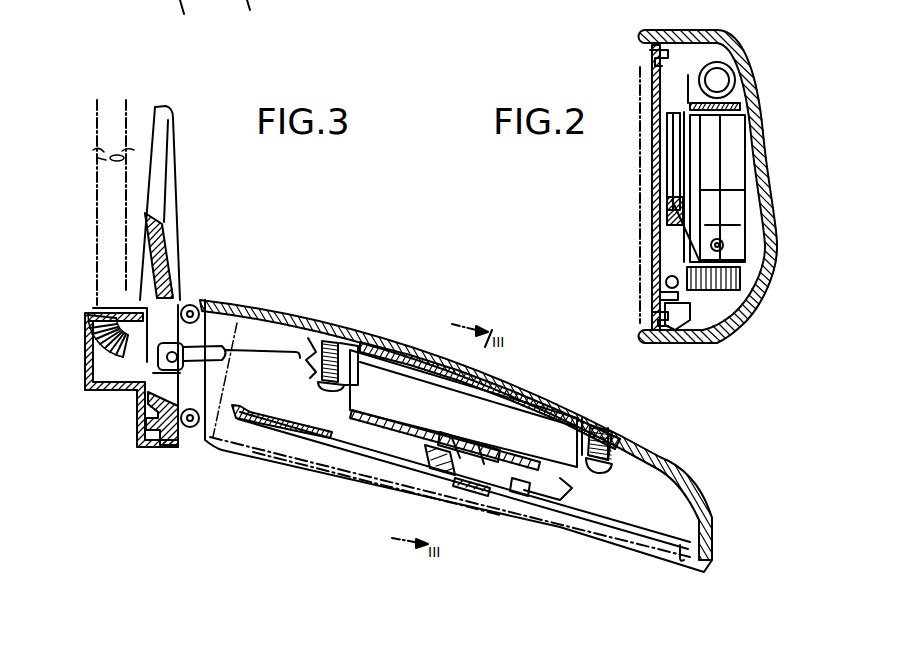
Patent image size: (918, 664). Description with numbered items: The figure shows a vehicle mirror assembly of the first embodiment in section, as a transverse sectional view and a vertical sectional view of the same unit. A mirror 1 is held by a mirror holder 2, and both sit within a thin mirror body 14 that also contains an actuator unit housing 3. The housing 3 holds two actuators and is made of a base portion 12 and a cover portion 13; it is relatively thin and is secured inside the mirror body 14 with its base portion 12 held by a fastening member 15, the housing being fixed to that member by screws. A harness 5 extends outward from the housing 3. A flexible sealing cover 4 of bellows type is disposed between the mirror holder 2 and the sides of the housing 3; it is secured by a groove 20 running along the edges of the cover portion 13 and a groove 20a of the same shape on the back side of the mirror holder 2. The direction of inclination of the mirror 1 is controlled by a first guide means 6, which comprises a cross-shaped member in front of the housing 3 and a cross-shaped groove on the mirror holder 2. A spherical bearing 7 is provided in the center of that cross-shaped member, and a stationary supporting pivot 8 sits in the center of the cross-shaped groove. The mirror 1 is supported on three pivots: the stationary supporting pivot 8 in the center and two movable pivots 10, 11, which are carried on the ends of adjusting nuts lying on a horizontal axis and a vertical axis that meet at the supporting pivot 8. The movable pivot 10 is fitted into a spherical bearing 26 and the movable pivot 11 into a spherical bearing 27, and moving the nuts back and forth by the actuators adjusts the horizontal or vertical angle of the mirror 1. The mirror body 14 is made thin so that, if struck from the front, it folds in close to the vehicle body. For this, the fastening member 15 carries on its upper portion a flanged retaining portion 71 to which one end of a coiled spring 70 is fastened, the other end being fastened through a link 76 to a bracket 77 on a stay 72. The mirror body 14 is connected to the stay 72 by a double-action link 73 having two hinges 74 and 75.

In FIG. 3, the mirror 1 is at (280, 437).
In FIG. 2, the mirror 1 is at (653, 100).
In FIG. 3, the mirror holder 2 is at (277, 417).
In FIG. 2, the mirror holder 2 is at (652, 60).
In FIG. 3, the actuator unit housing 3 is at (407, 390).
In FIG. 2, the actuator unit housing 3 is at (745, 147).
In FIG. 3, the flexible sealing cover 4 is at (588, 488).
In FIG. 2, the flexible sealing cover 4 is at (689, 330).
In FIG. 3, the harness 5 is at (95, 259).
In FIG. 3, the first guide means 6 is at (463, 487).
In FIG. 2, the first guide means 6 is at (656, 220).
In FIG. 3, the spherical bearing 7 is at (447, 453).
In FIG. 2, the spherical bearing 7 is at (683, 200).
In FIG. 3, the stationary supporting pivot 8 is at (440, 475).
In FIG. 2, the stationary supporting pivot 8 is at (668, 207).
In FIG. 3, the movable pivot 10 is at (520, 492).
In FIG. 2, the movable pivot 11 is at (665, 282).
In FIG. 2, the base portion 12 is at (733, 133).
In FIG. 2, the cover portion 13 is at (690, 147).
In FIG. 3, the mirror body 14 is at (680, 441).
In FIG. 2, the mirror body 14 is at (648, 31).
In FIG. 3, the fastening member 15 is at (583, 420).
In FIG. 2, the groove 20 is at (707, 323).
In FIG. 2, the groove 20a is at (672, 313).
In FIG. 3, the spherical bearing 26 is at (525, 497).
In FIG. 2, the spherical bearing 27 is at (667, 293).
In FIG. 3, the coiled spring 70 is at (323, 342).
In FIG. 2, the coiled spring 70 is at (718, 72).
In FIG. 2, the retaining portion 71 is at (688, 73).
In FIG. 3, the stay 72 is at (166, 212).
In FIG. 3, the double-action link 73 is at (187, 390).
In FIG. 3, the hinge 74 is at (190, 428).
In FIG. 3, the hinge 75 is at (193, 306).
In FIG. 3, the link 76 is at (224, 355).
In FIG. 3, the bracket 77 is at (168, 348).